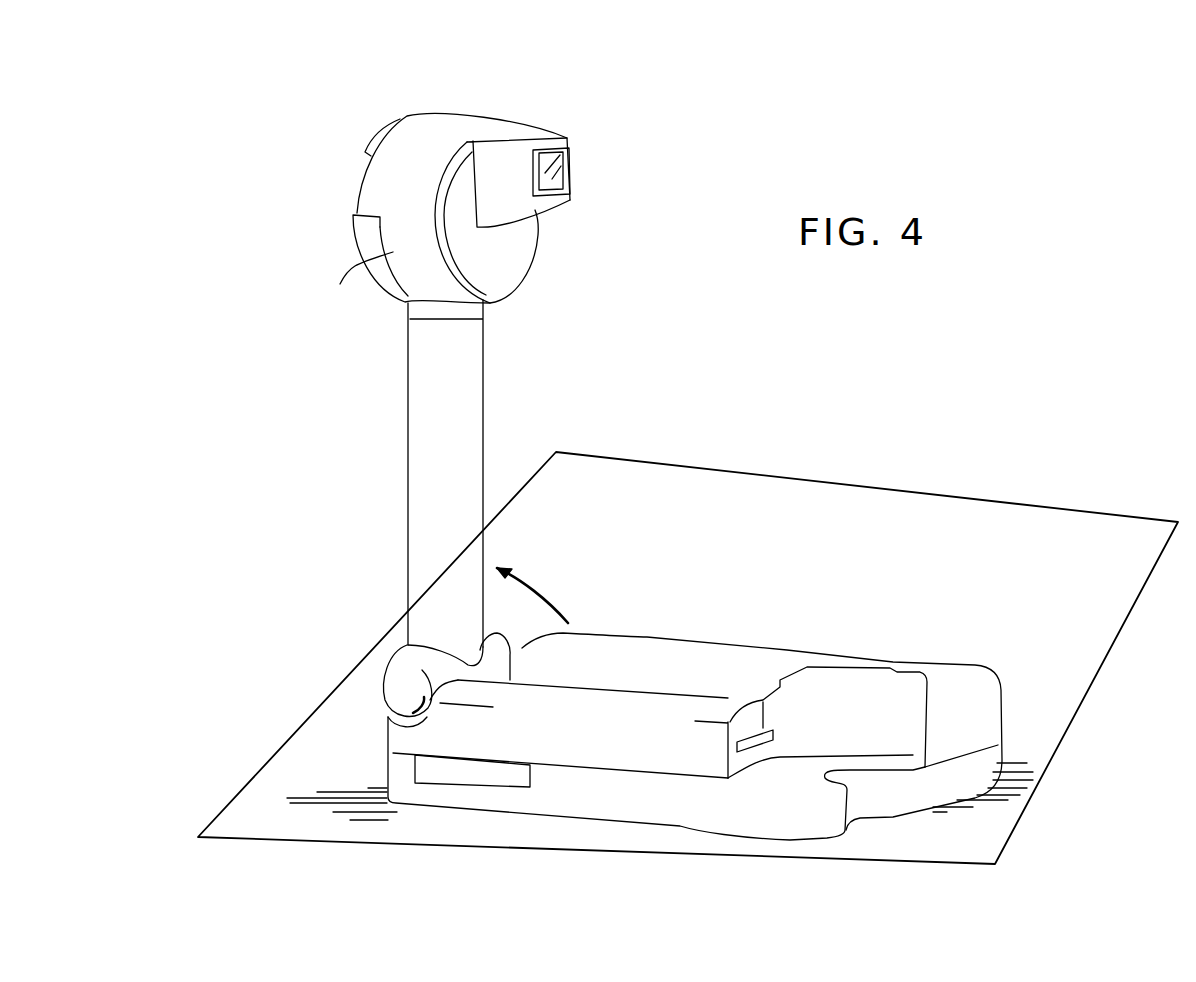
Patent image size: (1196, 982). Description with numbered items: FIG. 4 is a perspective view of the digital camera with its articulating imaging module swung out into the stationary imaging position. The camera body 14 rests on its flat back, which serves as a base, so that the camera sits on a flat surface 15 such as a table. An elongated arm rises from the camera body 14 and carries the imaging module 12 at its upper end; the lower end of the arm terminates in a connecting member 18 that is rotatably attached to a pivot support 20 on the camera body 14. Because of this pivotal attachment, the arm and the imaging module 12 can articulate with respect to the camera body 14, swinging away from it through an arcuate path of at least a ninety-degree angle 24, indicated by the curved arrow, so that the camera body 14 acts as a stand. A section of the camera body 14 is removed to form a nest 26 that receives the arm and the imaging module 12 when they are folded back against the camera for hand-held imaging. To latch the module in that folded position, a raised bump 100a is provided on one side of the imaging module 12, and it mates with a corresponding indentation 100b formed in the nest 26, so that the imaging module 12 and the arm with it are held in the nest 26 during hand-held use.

The imaging module 12 is at (443, 138).
The camera body 14 is at (387, 738).
The flat surface 15 is at (913, 495).
The connecting member 18 is at (393, 680).
The pivot support 20 is at (510, 632).
The 90° angle 24 is at (547, 590).
The nest 26 is at (820, 723).
The raised bump 100a is at (340, 284).
The indentation 100b is at (763, 700).